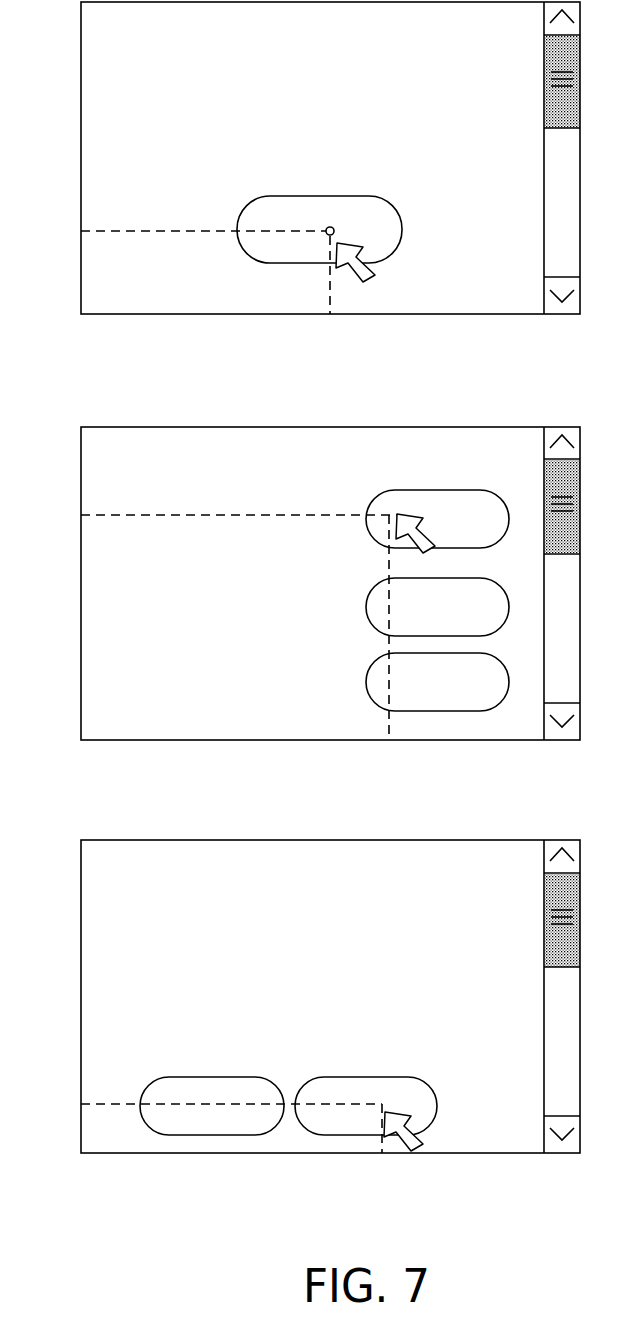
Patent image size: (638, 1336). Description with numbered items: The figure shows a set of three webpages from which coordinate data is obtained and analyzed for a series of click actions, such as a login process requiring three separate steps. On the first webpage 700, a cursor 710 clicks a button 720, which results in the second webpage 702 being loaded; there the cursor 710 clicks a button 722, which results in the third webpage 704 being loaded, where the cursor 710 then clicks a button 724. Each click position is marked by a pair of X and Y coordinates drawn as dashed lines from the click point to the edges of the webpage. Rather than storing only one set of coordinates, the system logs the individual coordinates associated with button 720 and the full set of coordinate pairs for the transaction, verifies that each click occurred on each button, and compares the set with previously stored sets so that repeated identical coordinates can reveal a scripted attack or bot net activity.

The webpage 700 is at (313, 179).
The webpage 702 is at (313, 604).
The webpage 704 is at (313, 1016).
The cursor 710 is at (368, 277).
The button 720 is at (353, 196).
The button 722 is at (450, 490).
The button 724 is at (388, 1077).